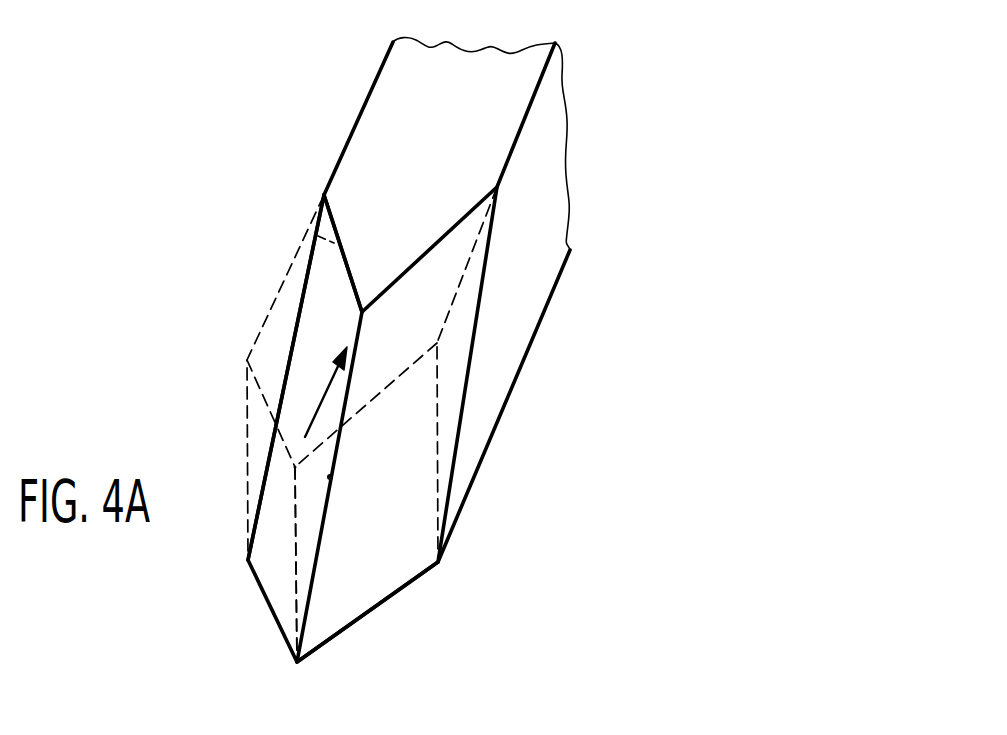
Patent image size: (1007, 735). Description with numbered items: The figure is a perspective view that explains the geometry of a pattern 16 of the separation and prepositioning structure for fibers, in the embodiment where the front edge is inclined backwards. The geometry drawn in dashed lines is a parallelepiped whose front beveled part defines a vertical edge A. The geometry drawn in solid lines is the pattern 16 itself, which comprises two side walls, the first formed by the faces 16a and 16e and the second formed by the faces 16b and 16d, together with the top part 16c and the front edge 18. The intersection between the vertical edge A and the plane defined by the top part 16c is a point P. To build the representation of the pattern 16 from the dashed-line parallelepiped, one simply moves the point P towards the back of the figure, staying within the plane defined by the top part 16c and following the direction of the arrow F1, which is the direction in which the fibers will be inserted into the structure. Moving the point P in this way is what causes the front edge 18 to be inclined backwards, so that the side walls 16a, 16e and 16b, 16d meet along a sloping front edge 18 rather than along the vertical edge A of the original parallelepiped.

The pattern 16 is at (340, 100).
The side wall 16a is at (320, 325).
The side wall 16b is at (400, 561).
The top part 16c is at (492, 73).
The side wall 16d is at (525, 285).
The side wall 16e is at (312, 230).
The front edge 18 is at (330, 477).
The arrow F1 is at (320, 400).
The point P is at (297, 467).
The vertical edge A is at (292, 573).